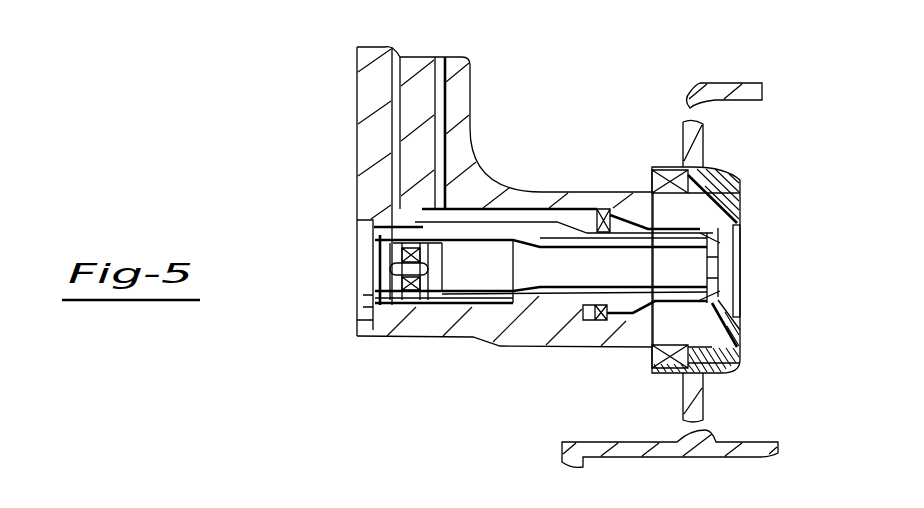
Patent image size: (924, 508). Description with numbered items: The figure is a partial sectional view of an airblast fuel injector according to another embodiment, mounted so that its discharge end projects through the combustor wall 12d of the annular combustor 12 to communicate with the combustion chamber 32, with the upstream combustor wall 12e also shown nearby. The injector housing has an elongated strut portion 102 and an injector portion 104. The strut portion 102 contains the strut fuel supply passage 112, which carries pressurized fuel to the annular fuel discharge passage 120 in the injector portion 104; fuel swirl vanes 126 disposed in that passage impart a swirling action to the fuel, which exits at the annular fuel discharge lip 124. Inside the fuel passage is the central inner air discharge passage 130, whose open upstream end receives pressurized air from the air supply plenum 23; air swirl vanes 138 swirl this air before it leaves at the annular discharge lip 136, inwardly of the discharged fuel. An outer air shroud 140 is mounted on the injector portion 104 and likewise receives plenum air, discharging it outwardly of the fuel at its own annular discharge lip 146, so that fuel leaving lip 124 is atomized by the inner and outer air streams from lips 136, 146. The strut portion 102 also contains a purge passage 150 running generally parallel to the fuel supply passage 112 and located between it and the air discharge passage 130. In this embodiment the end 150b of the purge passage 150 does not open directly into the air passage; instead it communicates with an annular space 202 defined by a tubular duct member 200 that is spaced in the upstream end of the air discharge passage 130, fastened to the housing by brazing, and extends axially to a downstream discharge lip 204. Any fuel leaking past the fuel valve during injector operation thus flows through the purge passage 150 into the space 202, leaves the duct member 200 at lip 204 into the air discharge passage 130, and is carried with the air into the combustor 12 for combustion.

The annular combustor 12 is at (716, 70).
The combustor wall 12d is at (704, 407).
The upstream combustor wall 12e is at (562, 452).
The air supply plenum 23 is at (320, 319).
The combustion chamber 32 is at (838, 315).
The strut portion 102 is at (467, 130).
The injector portion 104 is at (531, 349).
The strut fuel supply passage 112 is at (440, 96).
The annular fuel discharge passage 120 is at (555, 207).
The annular fuel discharge lip 124 is at (728, 283).
The fuel swirl vanes 126 is at (603, 208).
The inner air discharge passage 130 is at (574, 268).
The annular discharge lip 136 is at (741, 257).
The air swirl vanes 138 is at (410, 290).
The outer air shroud 140 is at (751, 166).
The annular discharge lip 146 is at (741, 273).
The purge passage 150 is at (400, 100).
The end of purge passage 150b is at (397, 207).
The tubular duct member 200 is at (390, 269).
The annular space 202 is at (380, 228).
The downstream discharge lip 204 is at (447, 265).